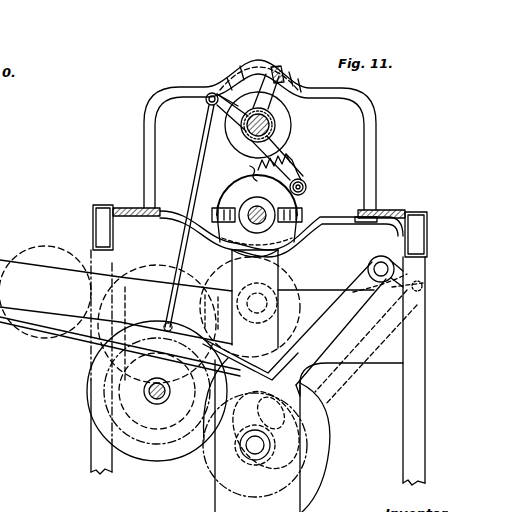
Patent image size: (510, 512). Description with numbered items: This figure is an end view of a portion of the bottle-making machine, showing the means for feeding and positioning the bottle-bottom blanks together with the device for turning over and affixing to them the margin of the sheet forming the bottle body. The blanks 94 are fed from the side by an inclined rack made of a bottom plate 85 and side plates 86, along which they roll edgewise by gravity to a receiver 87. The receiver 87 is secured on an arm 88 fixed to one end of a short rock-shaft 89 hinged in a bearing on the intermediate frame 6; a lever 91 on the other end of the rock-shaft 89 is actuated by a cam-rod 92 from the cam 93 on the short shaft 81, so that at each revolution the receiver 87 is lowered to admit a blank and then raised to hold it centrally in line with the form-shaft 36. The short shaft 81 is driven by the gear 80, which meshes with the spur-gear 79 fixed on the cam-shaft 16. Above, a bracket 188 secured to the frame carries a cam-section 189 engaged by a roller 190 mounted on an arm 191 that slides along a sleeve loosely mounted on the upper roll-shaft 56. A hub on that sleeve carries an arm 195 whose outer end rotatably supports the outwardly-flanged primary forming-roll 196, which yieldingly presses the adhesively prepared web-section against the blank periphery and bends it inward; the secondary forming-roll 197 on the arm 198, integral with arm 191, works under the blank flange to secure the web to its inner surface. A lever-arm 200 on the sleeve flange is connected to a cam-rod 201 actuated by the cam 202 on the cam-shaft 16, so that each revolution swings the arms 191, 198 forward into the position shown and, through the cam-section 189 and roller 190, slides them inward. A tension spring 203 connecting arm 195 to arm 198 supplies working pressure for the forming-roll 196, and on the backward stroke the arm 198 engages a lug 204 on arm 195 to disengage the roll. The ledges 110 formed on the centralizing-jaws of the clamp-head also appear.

The intermediate frame 6 is at (331, 291).
The cam-shaft 16 is at (157, 396).
The form-shaft 36 is at (261, 210).
The upper roll-shaft 56 is at (276, 124).
The spur-gear 79 is at (149, 445).
The gear 80 is at (207, 476).
The short shaft 81 is at (256, 456).
The bottom plate 85 is at (34, 335).
The side plates 86 is at (150, 320).
The receiver 87 is at (262, 375).
The arm 88 is at (328, 325).
The rock-shaft 89 is at (380, 257).
The lever 91 is at (413, 271).
The cam-rod 92 is at (333, 368).
The cam 93 is at (330, 448).
The blanks 94 is at (42, 258).
The ledges 110 is at (128, 207).
The bracket 188 is at (376, 141).
The cam-section 189 is at (243, 67).
The roller 190 is at (282, 70).
The arm 191 is at (285, 100).
The arm 195 is at (292, 173).
The primary forming-roll 196 is at (307, 188).
The secondary forming-roll 197 is at (248, 173).
The arm 198 is at (250, 151).
The lever-arm 200 is at (236, 108).
The cam-rod 201 is at (203, 147).
The cam 202 is at (88, 401).
The tension spring 203 is at (291, 159).
The lug 204 is at (298, 139).